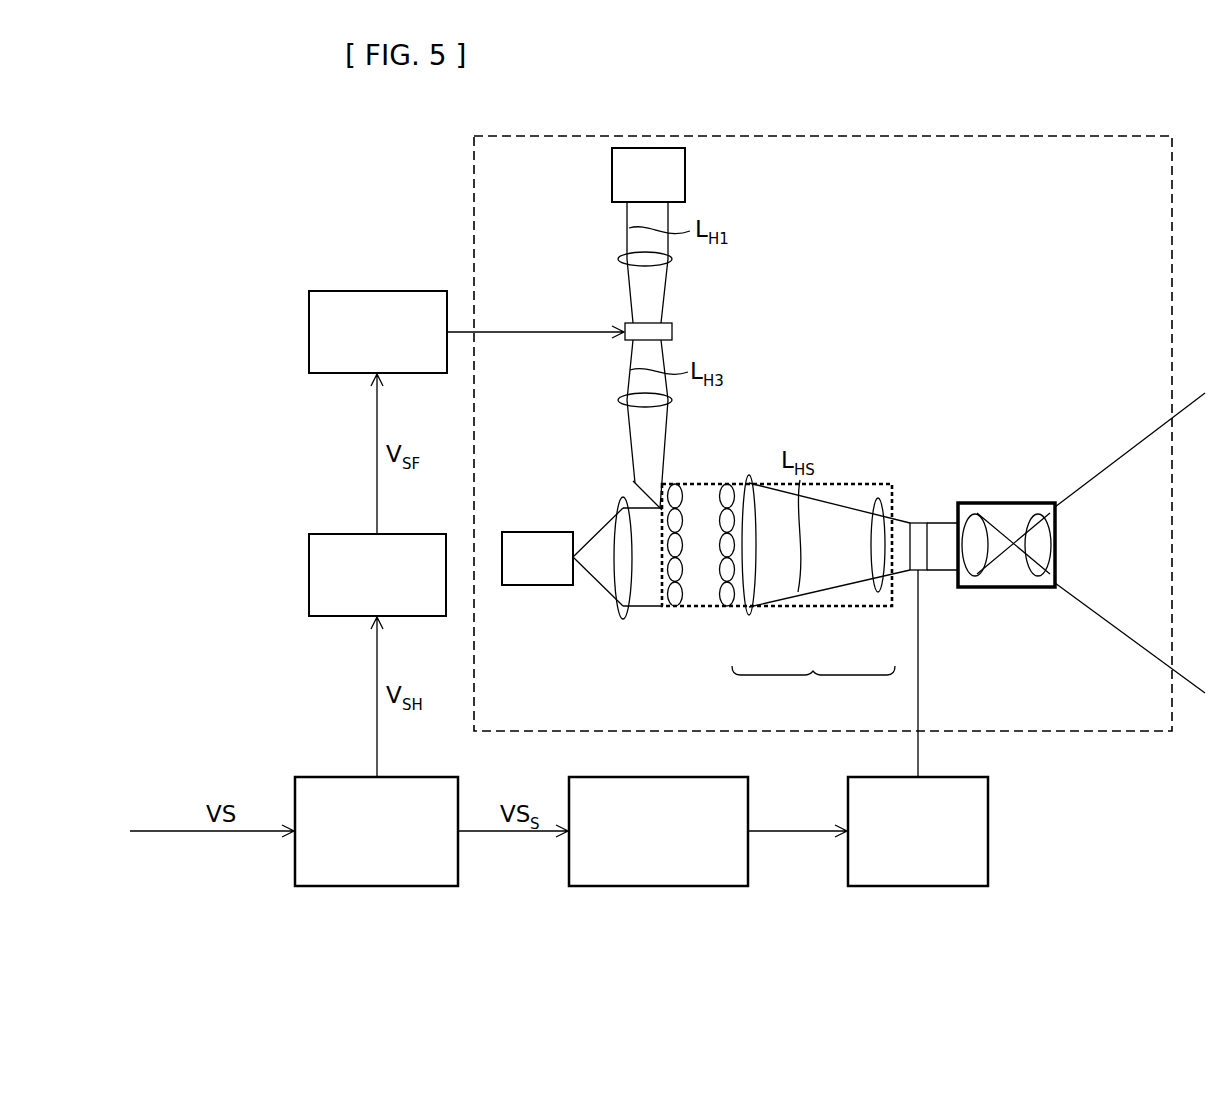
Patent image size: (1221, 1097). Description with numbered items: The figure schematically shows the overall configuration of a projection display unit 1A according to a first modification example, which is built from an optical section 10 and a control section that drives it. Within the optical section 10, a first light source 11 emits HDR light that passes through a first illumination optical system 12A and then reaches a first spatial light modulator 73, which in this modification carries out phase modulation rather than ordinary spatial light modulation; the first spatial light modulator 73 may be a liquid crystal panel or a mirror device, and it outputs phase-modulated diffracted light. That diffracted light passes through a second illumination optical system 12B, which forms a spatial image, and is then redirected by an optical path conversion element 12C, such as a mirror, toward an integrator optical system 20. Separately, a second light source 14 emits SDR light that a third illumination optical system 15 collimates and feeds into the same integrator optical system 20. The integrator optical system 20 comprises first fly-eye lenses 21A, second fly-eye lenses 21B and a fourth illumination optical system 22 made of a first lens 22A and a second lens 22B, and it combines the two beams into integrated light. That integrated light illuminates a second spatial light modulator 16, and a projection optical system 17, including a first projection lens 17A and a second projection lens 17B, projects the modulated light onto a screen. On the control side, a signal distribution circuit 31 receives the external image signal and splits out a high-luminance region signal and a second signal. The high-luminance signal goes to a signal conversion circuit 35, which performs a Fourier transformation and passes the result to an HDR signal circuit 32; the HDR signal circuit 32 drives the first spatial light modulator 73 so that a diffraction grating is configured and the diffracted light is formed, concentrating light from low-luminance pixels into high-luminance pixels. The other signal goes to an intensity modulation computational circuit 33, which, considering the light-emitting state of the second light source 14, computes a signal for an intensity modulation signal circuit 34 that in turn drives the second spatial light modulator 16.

The projection display unit 1A is at (909, 108).
The optical section 10 is at (822, 135).
The first light source 11 is at (685, 175).
The first illumination optical system 12A is at (672, 259).
The second illumination optical system 12B is at (672, 400).
The optical path conversion element 12C is at (633, 483).
The second light source 14 is at (538, 586).
The third illumination optical system 15 is at (624, 620).
The second spatial light modulator 16 is at (920, 521).
The projection optical system 17 is at (1015, 590).
The first projection lens 17A is at (981, 513).
The second projection lens 17B is at (1038, 513).
The integrator optical system 20 is at (862, 482).
The first fly-eye lenses 21A is at (679, 483).
The second fly-eye lenses 21B is at (728, 483).
The fourth illumination optical system 22 is at (813, 688).
The first lens 22A is at (750, 618).
The second lens 22B is at (879, 594).
The signal distribution circuit 31 is at (379, 888).
The HDR signal circuit 32 is at (376, 290).
The intensity modulation computational circuit 33 is at (660, 888).
The intensity modulation signal circuit 34 is at (921, 888).
The signal conversion circuit 35 is at (308, 576).
The first spatial light modulator 73 is at (672, 332).